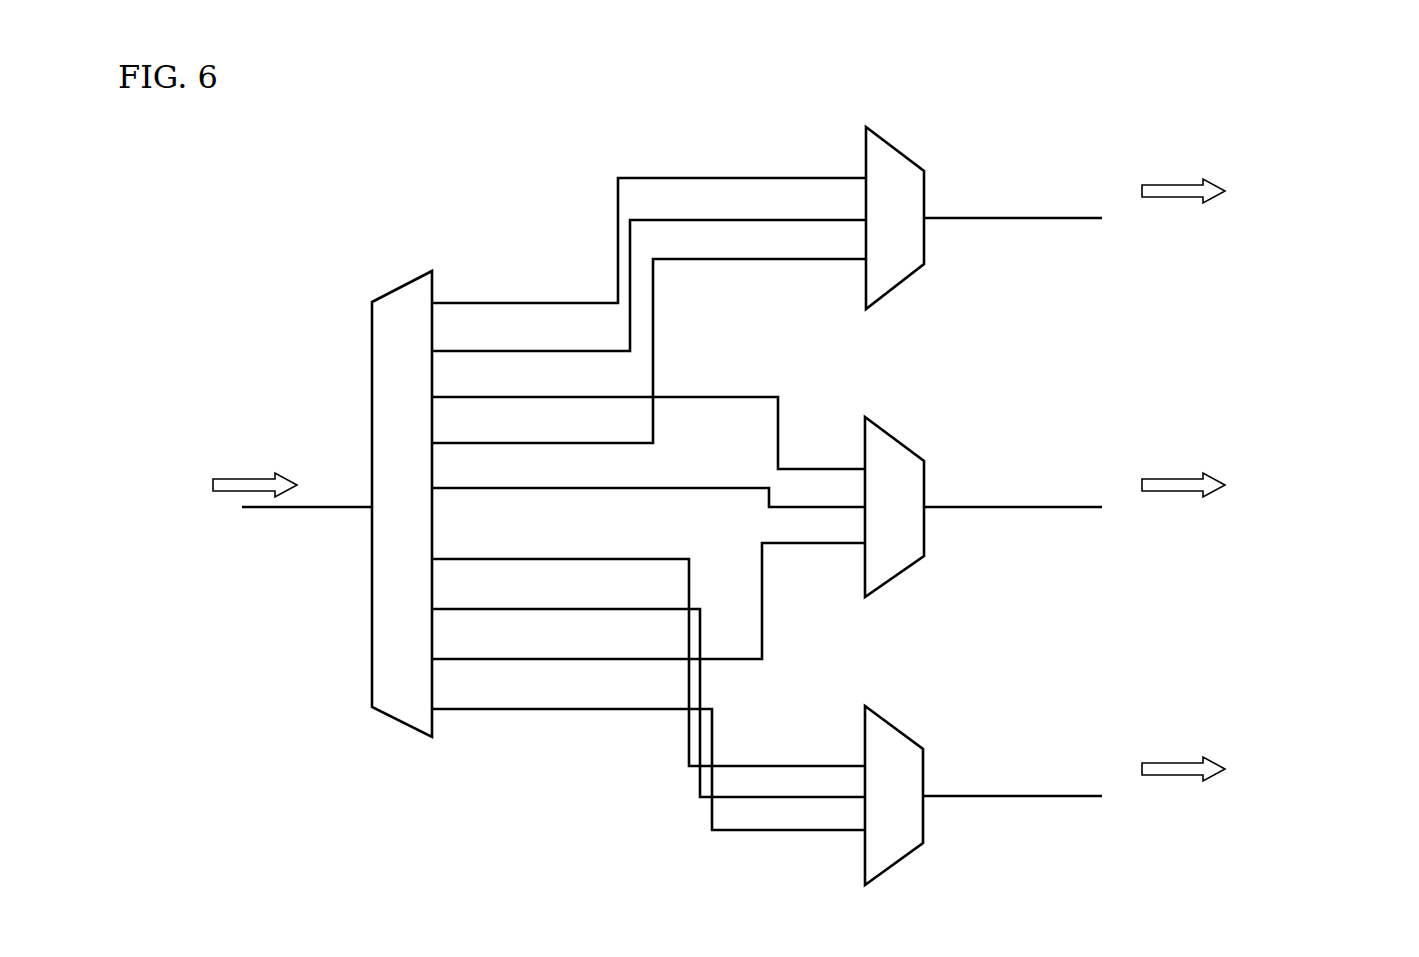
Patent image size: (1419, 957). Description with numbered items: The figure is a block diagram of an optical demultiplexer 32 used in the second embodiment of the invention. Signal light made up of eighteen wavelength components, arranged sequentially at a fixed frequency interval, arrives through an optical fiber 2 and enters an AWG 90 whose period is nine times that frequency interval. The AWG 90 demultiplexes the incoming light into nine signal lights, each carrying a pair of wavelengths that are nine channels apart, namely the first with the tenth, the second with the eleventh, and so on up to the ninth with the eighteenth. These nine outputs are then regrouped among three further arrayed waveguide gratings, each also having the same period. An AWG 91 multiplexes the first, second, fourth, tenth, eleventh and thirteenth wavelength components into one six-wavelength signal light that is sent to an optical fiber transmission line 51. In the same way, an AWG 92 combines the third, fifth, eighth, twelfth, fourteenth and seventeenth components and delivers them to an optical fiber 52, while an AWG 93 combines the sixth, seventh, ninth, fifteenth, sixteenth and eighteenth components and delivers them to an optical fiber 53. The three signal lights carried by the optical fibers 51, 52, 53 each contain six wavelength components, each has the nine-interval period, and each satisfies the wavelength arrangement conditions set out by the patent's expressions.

The optical fiber 2 is at (292, 508).
The AWG 90 is at (388, 718).
The AWG 91 is at (909, 174).
The AWG 92 is at (900, 453).
The AWG 93 is at (898, 760).
The optical demultiplexer 32 is at (896, 346).
The optical fiber transmission line 51 is at (1062, 220).
The optical fiber 52 is at (1060, 510).
The optical fiber 53 is at (1060, 805).